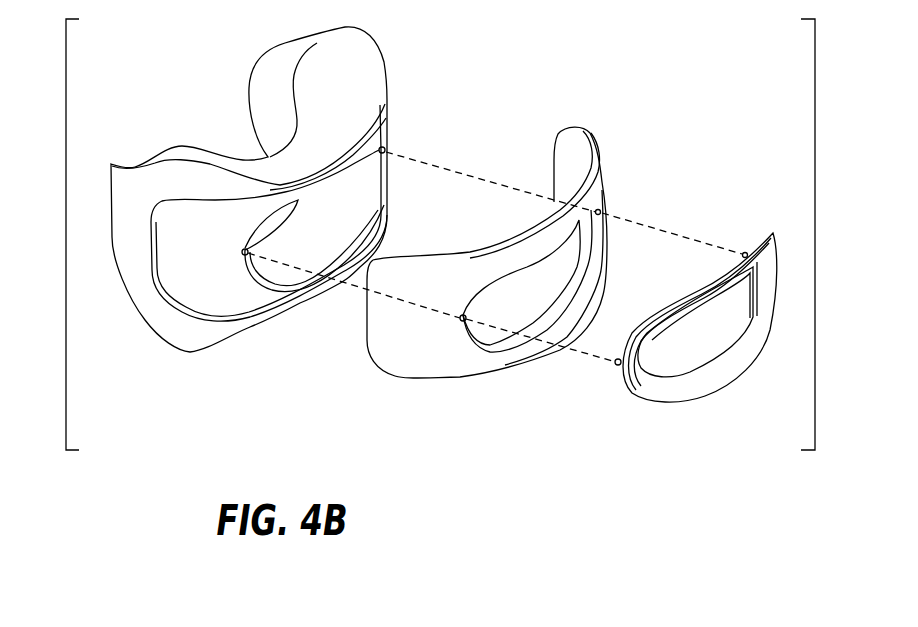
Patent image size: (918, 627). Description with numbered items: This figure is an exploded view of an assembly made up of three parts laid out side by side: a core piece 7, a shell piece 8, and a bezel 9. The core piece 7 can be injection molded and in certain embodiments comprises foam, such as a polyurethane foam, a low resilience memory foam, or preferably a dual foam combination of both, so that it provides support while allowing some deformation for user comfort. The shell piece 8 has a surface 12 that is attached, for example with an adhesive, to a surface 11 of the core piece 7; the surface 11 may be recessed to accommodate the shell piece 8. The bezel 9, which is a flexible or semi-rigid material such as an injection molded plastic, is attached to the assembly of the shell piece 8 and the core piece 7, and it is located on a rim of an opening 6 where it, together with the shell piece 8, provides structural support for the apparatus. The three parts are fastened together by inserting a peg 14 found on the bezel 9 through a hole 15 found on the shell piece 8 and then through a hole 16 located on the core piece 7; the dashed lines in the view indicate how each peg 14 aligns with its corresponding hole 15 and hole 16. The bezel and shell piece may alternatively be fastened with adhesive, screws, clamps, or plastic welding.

The opening 6 is at (363, 198).
The core piece 7 is at (282, 214).
The shell piece 8 is at (504, 272).
The bezel 9 is at (680, 348).
The surface of core piece 11 is at (250, 300).
The surface of shell piece 12 is at (573, 152).
The peg 14 is at (728, 283).
The hole 15 is at (600, 212).
The hole 16 is at (387, 150).